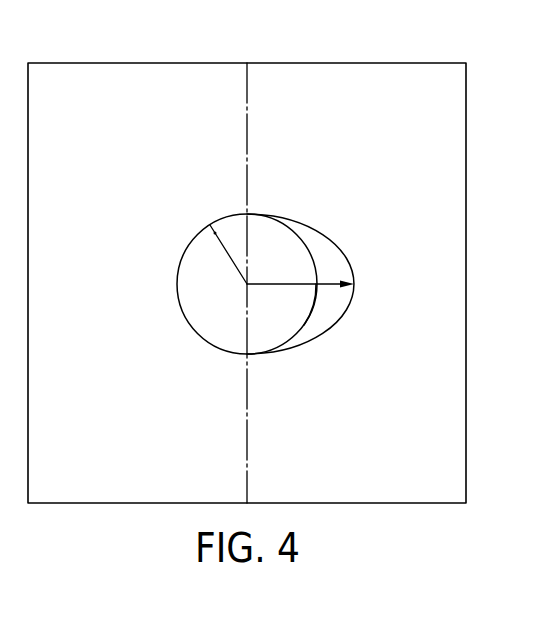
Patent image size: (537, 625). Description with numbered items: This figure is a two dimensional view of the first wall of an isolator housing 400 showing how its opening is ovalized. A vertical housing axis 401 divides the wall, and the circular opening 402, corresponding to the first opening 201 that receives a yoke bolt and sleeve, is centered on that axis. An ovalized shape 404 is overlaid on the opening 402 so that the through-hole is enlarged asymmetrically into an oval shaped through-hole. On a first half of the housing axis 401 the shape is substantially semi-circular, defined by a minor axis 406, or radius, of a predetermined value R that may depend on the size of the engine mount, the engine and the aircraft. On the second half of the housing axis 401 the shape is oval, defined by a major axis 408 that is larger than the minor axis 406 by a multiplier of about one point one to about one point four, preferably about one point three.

The isolator housing 400 is at (68, 63).
The housing axis 401 is at (248, 143).
The first opening 201 is at (207, 313).
The opening 402 is at (304, 325).
The ovalized shape 404 is at (347, 308).
The minor axis 406 is at (223, 252).
The major axis 408 is at (293, 283).